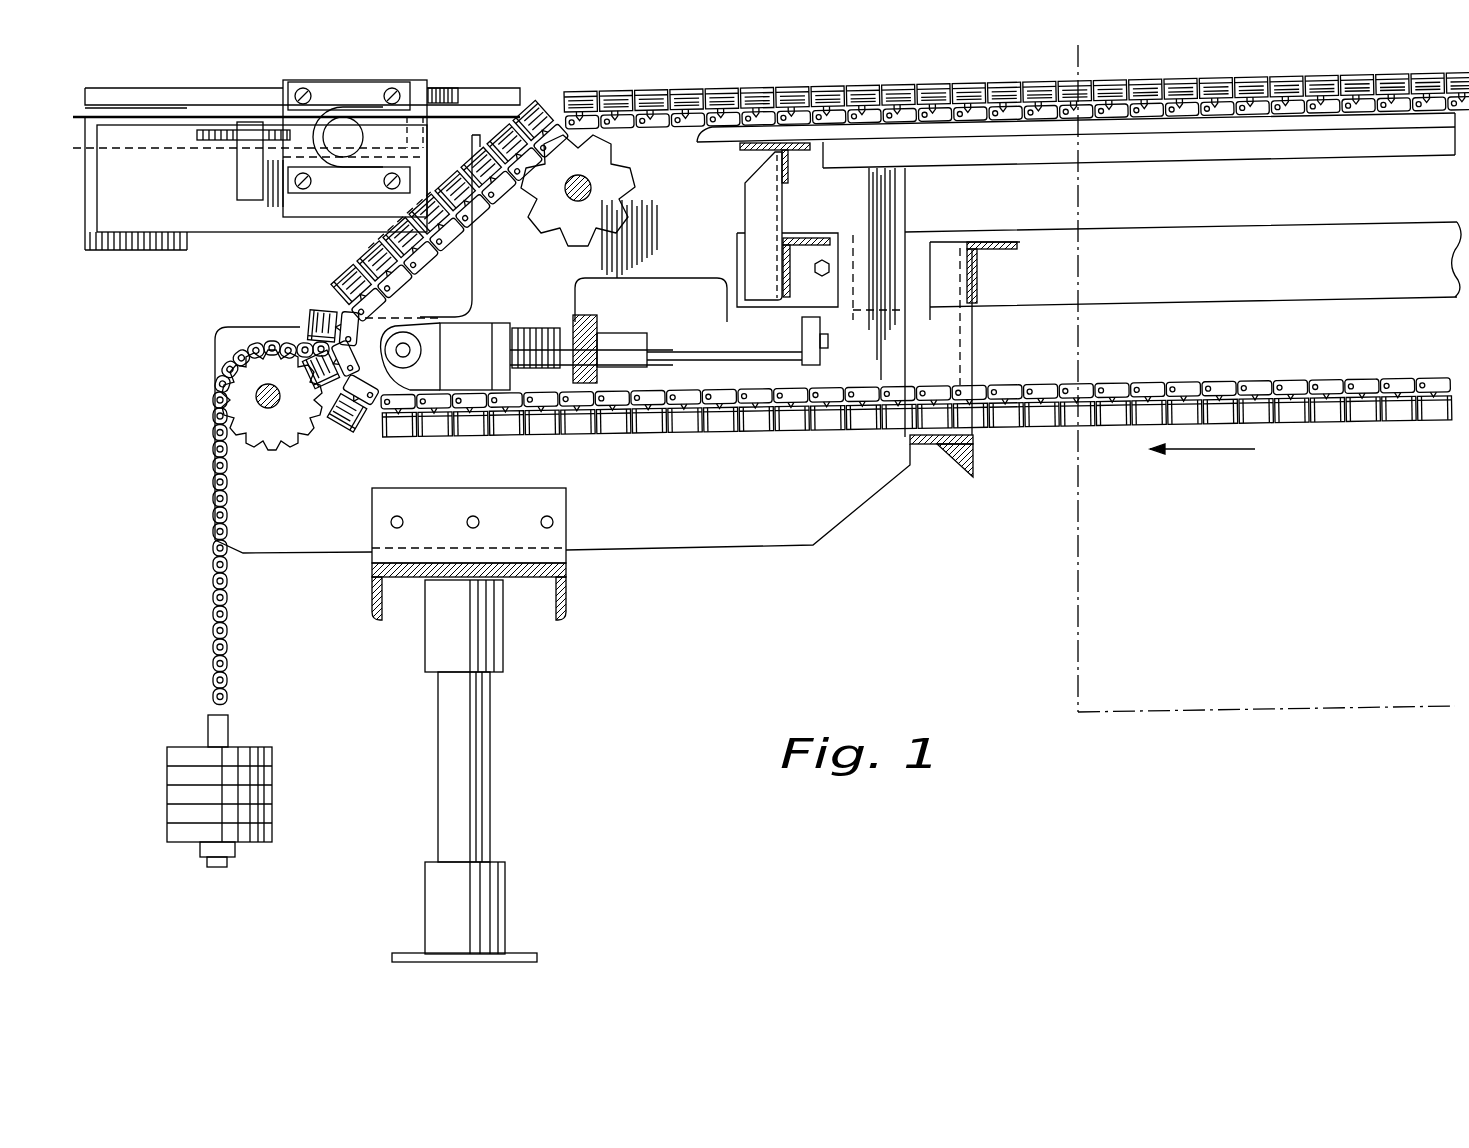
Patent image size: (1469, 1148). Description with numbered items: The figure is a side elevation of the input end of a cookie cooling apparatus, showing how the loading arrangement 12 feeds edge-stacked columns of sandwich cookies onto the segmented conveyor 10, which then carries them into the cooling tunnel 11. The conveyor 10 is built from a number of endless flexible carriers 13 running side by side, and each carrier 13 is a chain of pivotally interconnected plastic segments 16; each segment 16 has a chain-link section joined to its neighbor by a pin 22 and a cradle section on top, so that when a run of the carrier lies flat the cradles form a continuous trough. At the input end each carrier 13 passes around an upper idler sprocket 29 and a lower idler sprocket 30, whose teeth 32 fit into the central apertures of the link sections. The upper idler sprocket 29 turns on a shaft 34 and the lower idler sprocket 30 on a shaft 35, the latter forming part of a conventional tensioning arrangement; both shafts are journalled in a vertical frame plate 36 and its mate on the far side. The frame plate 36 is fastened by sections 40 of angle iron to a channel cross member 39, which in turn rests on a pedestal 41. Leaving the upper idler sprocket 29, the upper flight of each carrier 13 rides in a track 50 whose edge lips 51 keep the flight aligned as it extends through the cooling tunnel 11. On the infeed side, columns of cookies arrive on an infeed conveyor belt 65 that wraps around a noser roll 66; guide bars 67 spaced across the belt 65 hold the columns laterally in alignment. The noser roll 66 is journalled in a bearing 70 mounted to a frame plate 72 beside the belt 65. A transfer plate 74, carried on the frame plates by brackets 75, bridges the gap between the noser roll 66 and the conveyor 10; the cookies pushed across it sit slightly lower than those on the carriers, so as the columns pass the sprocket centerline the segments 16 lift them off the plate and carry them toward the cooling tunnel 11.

The segmented conveyor 10 is at (705, 460).
The cooling tunnel 11 is at (1108, 722).
The arrangement for loading the conveyor 12 is at (506, 78).
The endless flexible carrier 13 is at (1016, 76).
The plastic segment 16 is at (1016, 72).
The pin 22 is at (1016, 86).
The upper idler sprocket 29 is at (620, 210).
The lower idler sprocket 30 is at (422, 300).
The teeth 32 is at (628, 188).
The shaft 34 is at (572, 200).
The shaft 35 is at (355, 428).
The frame plate 36 is at (845, 495).
The channel cross member 39 is at (568, 605).
The angle iron section 40 is at (567, 495).
The pedestal 41 is at (430, 640).
The track 50 is at (1000, 138).
The edge lip 51 is at (972, 108).
The infeed conveyor belt 65 is at (205, 112).
The noser roll 66 is at (360, 128).
The guide bar 67 is at (140, 88).
The bearing 70 is at (340, 128).
The frame plate 72 is at (175, 213).
The transfer plate 74 is at (462, 112).
The bracket 75 is at (436, 100).